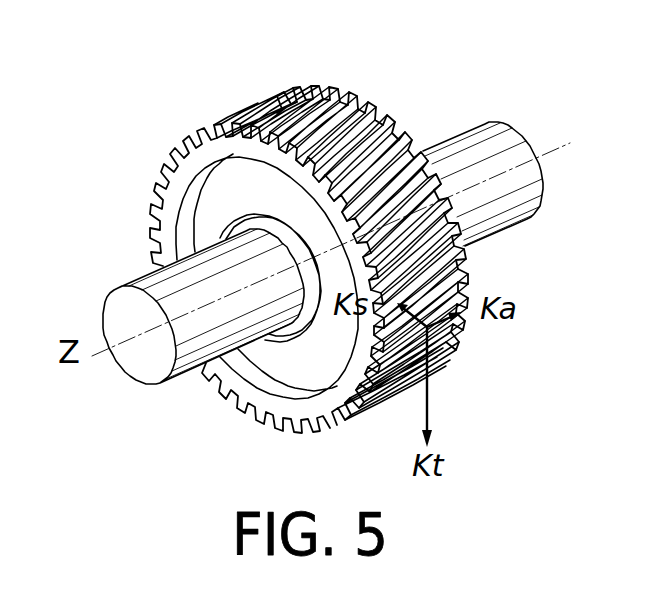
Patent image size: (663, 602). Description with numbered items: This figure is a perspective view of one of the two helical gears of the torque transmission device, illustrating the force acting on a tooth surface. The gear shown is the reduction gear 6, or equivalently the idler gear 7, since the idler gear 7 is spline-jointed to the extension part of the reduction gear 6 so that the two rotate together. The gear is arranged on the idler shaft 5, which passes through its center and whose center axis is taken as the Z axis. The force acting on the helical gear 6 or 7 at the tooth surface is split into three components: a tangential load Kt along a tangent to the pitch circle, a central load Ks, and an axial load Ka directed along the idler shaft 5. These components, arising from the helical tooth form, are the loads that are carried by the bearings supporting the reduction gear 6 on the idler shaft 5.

The idler shaft 5 is at (456, 133).
The reduction gear 6 is at (309, 216).
The idler gear 7 is at (291, 92).